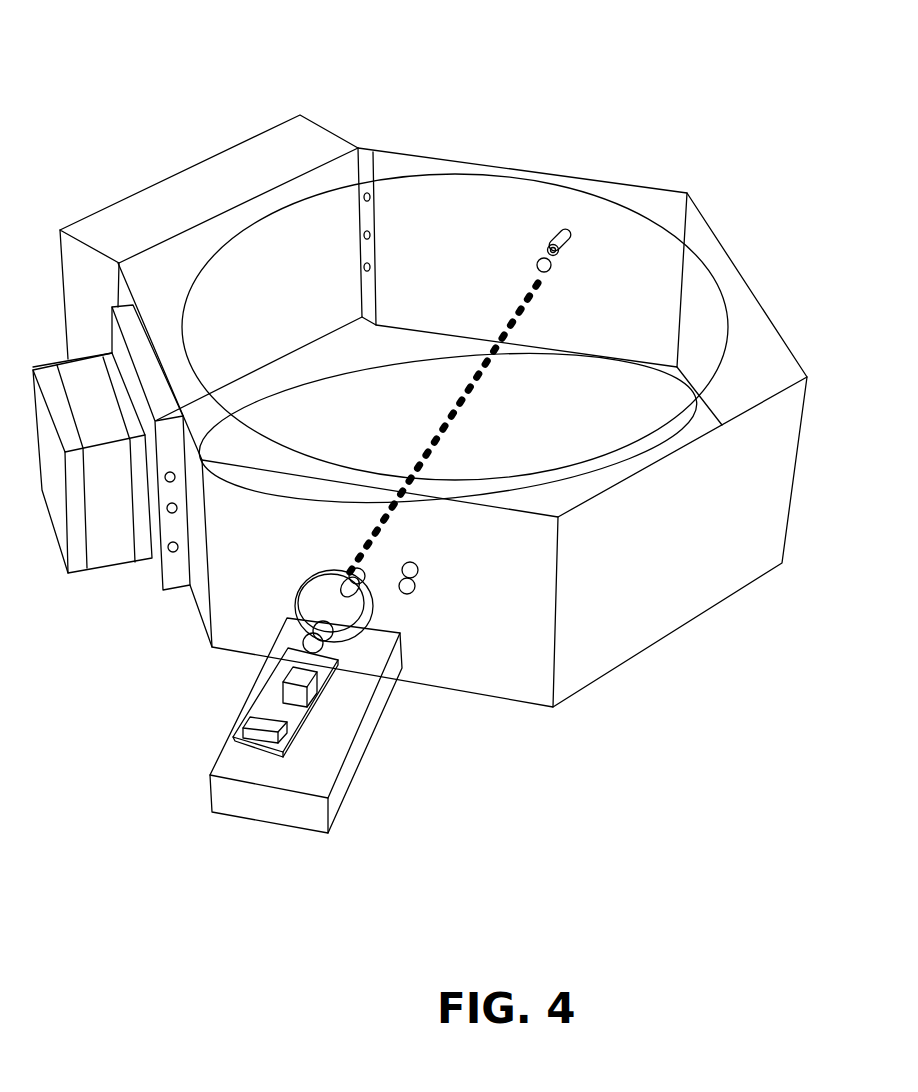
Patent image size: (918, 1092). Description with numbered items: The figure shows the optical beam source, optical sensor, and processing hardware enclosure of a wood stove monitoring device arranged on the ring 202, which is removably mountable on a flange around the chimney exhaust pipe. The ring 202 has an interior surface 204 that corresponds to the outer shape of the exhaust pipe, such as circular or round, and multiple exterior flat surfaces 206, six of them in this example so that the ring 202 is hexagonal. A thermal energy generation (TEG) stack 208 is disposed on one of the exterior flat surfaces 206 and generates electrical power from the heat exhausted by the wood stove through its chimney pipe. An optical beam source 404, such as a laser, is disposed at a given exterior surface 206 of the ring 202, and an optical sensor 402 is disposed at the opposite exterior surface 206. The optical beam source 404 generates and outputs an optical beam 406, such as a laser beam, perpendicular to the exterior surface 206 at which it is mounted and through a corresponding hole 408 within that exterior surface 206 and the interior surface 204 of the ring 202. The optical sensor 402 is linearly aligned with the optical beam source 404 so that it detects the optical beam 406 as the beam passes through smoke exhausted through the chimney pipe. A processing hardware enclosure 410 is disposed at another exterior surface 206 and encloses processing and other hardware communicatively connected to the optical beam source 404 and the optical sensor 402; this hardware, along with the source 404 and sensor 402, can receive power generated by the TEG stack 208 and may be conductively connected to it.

The ring 202 is at (578, 738).
The interior surface 204 is at (568, 366).
The exterior flat surfaces 206 is at (450, 160).
The thermal energy generation (TEG) stack 208 is at (128, 572).
The optical sensor 402 is at (268, 700).
The optical beam source 404 is at (553, 228).
The optical beam 406 is at (461, 403).
The hole 408 is at (356, 607).
The processing hardware enclosure 410 is at (213, 163).